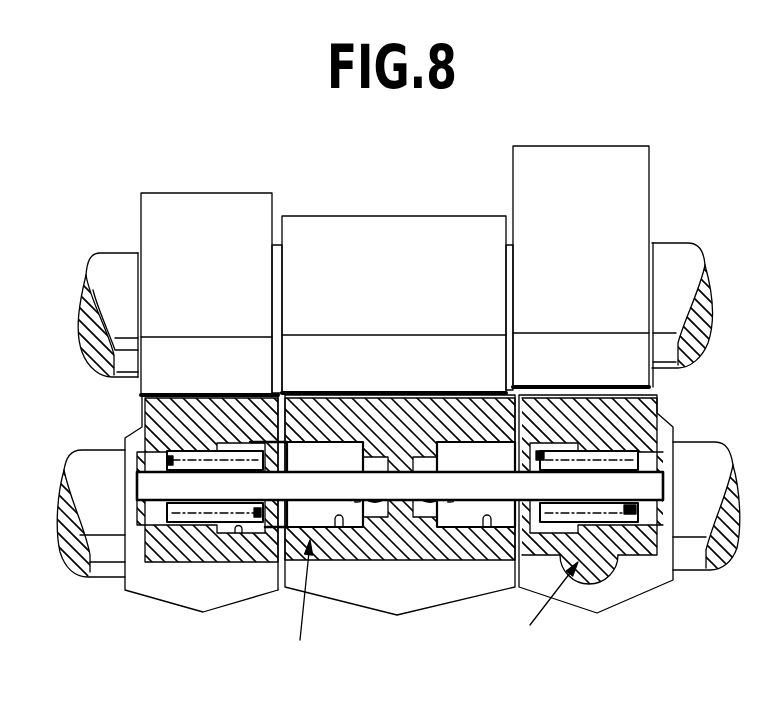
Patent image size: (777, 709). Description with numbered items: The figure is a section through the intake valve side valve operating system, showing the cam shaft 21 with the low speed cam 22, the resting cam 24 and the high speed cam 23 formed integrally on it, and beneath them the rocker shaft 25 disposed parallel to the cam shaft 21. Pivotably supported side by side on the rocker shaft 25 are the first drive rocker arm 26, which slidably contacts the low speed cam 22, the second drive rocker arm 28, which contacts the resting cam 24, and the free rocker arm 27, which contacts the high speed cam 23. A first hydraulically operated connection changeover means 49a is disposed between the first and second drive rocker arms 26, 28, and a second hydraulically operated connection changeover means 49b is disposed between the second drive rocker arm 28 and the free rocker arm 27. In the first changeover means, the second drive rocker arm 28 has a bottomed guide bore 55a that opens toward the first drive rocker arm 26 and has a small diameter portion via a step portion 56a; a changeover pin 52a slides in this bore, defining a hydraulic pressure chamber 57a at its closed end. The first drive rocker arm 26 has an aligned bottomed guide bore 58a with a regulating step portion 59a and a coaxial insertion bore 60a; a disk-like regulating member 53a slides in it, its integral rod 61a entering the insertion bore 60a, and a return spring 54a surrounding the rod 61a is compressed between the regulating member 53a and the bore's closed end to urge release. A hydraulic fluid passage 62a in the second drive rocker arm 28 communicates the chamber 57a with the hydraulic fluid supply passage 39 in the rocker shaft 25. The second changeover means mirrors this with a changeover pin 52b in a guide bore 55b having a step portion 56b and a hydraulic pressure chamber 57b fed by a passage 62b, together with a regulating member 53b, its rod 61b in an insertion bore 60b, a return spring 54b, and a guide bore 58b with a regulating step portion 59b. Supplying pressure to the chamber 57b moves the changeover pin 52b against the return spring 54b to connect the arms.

The cam shaft 21 is at (90, 287).
The low speed cam 22 is at (218, 290).
The high speed cam 23 is at (582, 280).
The resting cam 24 is at (398, 293).
The rocker shaft 25 is at (80, 463).
The first drive rocker arm 26 is at (197, 597).
The free rocker arm 27 is at (602, 607).
The second drive rocker arm 28 is at (393, 603).
The hydraulic fluid supply passage 39 is at (73, 530).
The first hydraulically operated connection changeover means 49a is at (298, 610).
The second hydraulically operated connection changeover means 49b is at (550, 611).
The changeover pin 52a is at (316, 485).
The changeover pin 52b is at (490, 485).
The regulating member 53a is at (257, 393).
The regulating member 53b is at (537, 390).
The return spring 54a is at (283, 589).
The return spring 54b is at (633, 508).
The guide bore 55a is at (339, 528).
The guide bore 55b is at (487, 528).
The step portion 56a is at (323, 392).
The step portion 56b is at (455, 393).
The hydraulic pressure chamber 57a is at (370, 393).
The hydraulic pressure chamber 57b is at (425, 393).
The guide bore 58a is at (238, 534).
The guide bore 58b is at (615, 578).
The regulating step portion 59a is at (202, 393).
The regulating step portion 59b is at (600, 390).
The insertion bore 60a is at (143, 474).
The insertion bore 60b is at (655, 470).
The rod 61a is at (162, 487).
The rod 61b is at (677, 435).
The hydraulic fluid passage 62a is at (375, 500).
The hydraulic fluid passage 62b is at (430, 500).